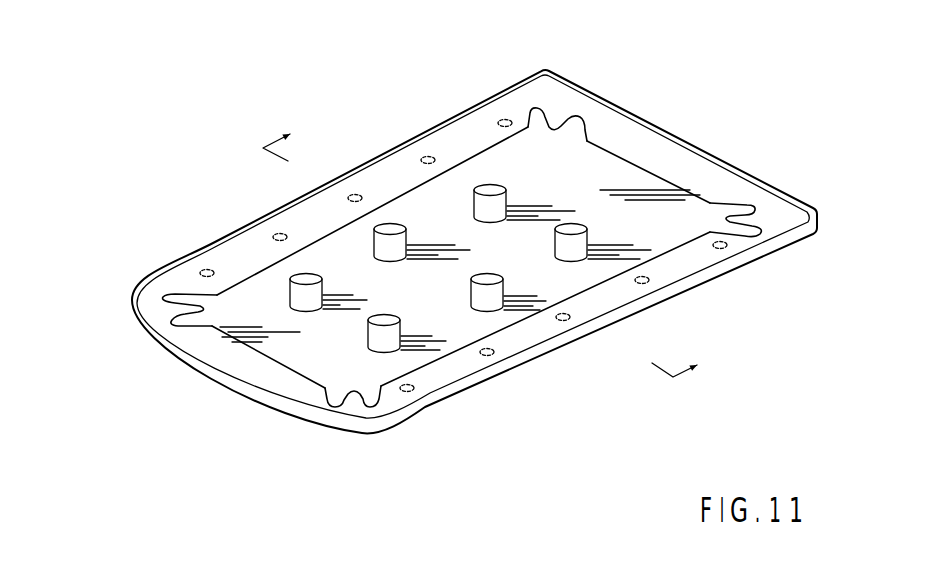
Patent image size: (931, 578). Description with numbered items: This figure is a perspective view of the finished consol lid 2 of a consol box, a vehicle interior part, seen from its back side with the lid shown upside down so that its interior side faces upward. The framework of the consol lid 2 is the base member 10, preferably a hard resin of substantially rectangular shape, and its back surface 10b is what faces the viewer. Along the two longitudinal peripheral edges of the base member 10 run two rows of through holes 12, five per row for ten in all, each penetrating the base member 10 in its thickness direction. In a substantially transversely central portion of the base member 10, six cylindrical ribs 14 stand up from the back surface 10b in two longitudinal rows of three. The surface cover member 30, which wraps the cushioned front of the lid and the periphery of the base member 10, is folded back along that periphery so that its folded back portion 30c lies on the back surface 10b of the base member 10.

The consol lid 2 is at (474, 244).
The base member 10 is at (670, 207).
The back surface 10b is at (473, 246).
The through holes 12 is at (208, 266).
The cylindrical ribs 14 is at (572, 226).
The surface cover member 30 is at (623, 137).
The folded back portion 30c is at (515, 105).